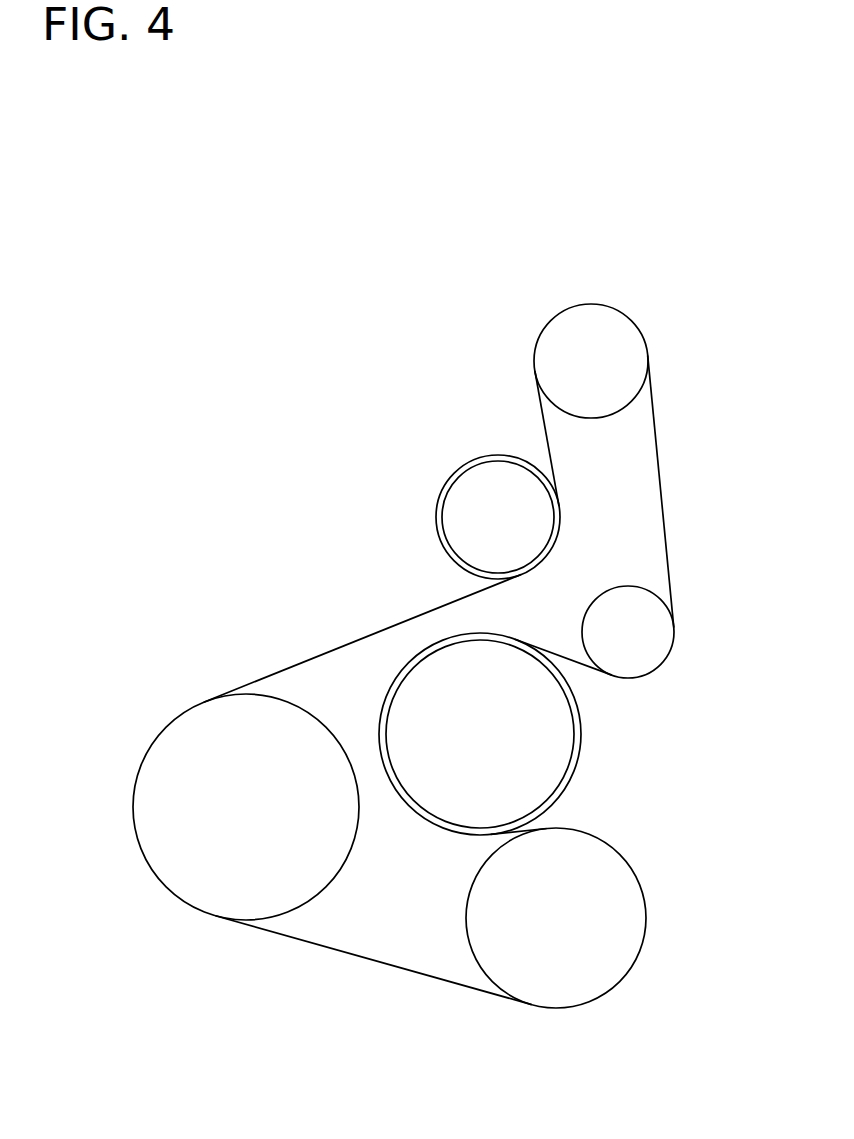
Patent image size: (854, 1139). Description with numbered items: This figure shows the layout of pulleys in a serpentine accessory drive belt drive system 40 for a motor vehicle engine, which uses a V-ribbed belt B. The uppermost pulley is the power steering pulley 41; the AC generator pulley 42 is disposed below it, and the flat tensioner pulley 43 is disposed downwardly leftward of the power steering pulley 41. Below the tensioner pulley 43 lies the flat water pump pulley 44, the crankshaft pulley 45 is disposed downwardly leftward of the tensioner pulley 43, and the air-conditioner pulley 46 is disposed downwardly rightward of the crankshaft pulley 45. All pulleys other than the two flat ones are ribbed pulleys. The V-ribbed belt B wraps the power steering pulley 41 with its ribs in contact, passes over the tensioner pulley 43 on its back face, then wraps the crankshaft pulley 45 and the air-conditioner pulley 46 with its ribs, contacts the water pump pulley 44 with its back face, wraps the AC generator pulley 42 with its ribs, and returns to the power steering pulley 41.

The accessory drive belt drive system 40 is at (339, 314).
The power steering pulley 41 is at (620, 331).
The AC generator pulley 42 is at (642, 650).
The tensioner pulley 43 is at (470, 487).
The water pump pulley 44 is at (552, 733).
The crankshaft pulley 45 is at (187, 893).
The air-conditioner pulley 46 is at (622, 932).
The V-ribbed belt B is at (362, 638).